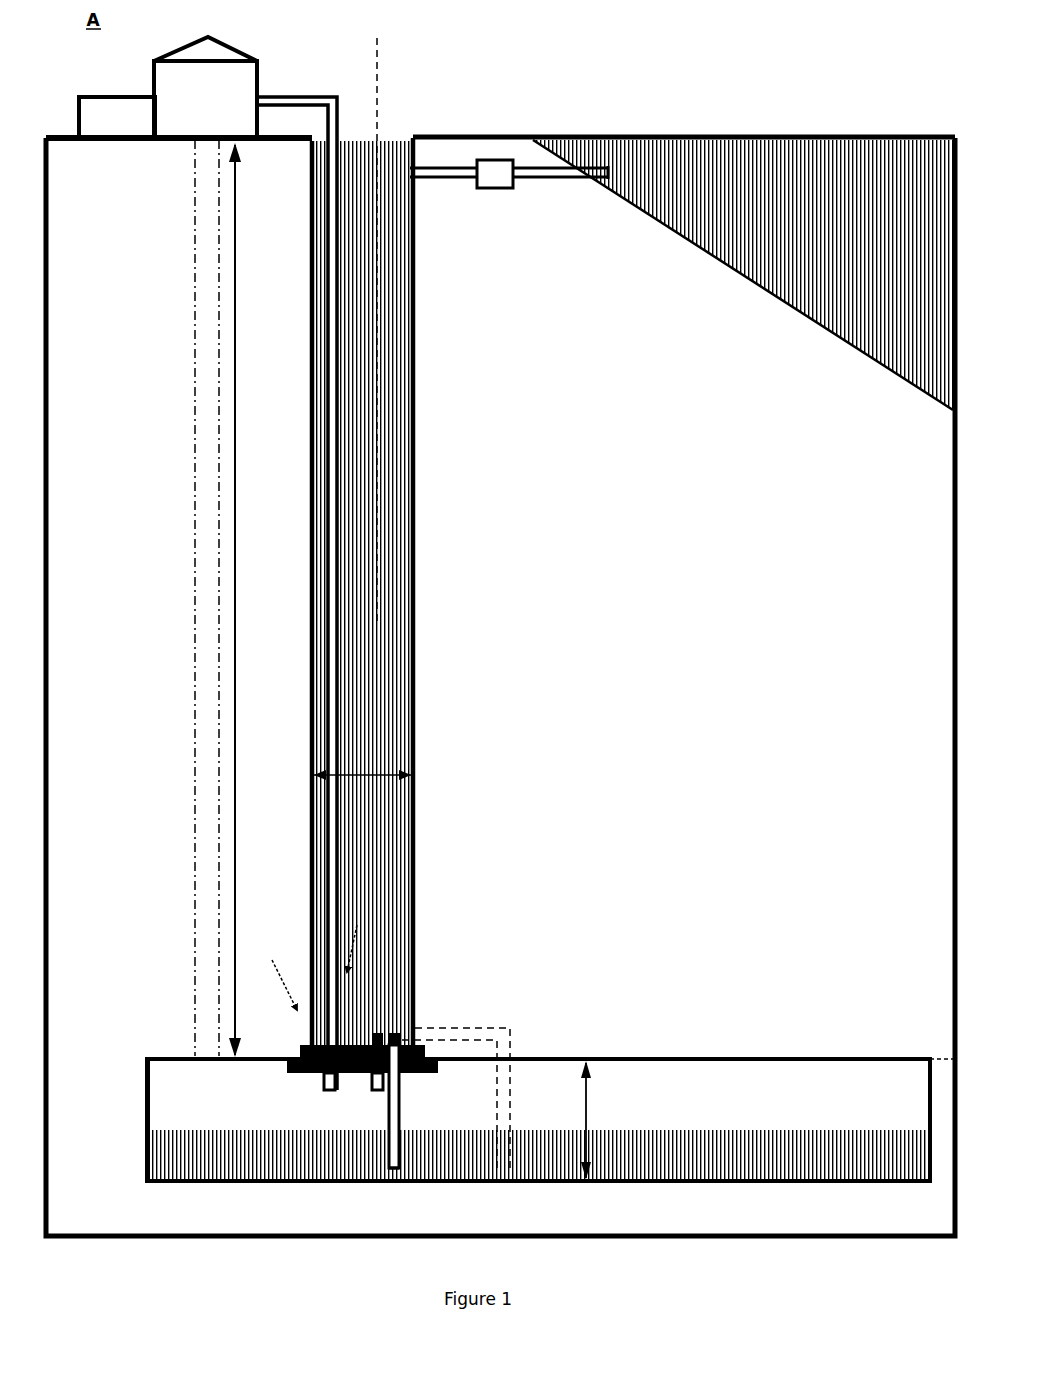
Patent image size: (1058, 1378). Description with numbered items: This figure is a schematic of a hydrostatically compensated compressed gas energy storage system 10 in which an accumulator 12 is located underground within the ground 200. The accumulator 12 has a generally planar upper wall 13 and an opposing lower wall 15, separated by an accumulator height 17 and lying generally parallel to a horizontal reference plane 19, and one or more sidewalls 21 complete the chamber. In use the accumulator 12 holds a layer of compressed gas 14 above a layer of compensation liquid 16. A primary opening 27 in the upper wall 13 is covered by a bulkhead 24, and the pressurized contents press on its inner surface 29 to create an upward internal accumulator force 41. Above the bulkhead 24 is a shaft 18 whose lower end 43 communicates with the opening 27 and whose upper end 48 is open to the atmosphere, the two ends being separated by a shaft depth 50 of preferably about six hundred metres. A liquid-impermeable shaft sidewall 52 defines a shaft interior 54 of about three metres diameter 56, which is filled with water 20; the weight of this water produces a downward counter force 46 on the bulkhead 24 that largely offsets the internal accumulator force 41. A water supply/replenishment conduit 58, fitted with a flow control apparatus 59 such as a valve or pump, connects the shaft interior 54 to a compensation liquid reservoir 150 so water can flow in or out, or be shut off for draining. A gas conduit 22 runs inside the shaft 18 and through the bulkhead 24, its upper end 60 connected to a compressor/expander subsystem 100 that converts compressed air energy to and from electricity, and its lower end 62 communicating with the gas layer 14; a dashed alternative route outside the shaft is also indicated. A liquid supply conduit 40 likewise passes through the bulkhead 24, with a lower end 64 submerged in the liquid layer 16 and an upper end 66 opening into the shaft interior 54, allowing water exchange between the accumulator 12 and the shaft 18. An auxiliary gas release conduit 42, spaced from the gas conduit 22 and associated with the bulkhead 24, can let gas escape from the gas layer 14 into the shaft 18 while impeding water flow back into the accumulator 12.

The hydrostatically compensated compressed gas energy storage system 10 is at (624, 78).
The compressor/expander subsystem 100 is at (268, 58).
The compensation liquid reservoir 150 is at (812, 187).
The ground 200 is at (676, 658).
The upper end of gas conduit 60 is at (283, 97).
The shaft 18 is at (310, 528).
The shaft sidewall 52 is at (415, 240).
The water 20 is at (320, 596).
The shaft interior 54 is at (400, 358).
The gas conduit 22 is at (326, 654).
The diameter 56 is at (363, 775).
The shaft depth 50 is at (238, 268).
The upper end of shaft 48 is at (297, 158).
The water supply/replenishment conduit 58 is at (538, 180).
The flow control apparatus 59 is at (495, 192).
The accumulator 12 is at (146, 1057).
The upper wall 13 is at (713, 1058).
The compressed gas layer 14 is at (153, 1108).
The lower wall 15 is at (712, 1183).
The compensation liquid layer 16 is at (157, 1160).
The accumulator height 17 is at (590, 1105).
The horizontal reference plane 19 is at (936, 1058).
The sidewall 21 is at (927, 1113).
The bulkhead 24 is at (300, 1045).
The inner surface 29 is at (303, 1077).
The primary opening 27 is at (283, 1072).
The counter force 46 is at (352, 1040).
The internal accumulator force 41 is at (350, 1078).
The auxiliary gas release conduit 42 is at (387, 1022).
The upper end of liquid supply conduit 66 is at (400, 1040).
The liquid supply conduit 40 is at (490, 1027).
The lower end of liquid supply conduit 64 is at (392, 1168).
The lower end of gas conduit 62 is at (360, 938).
The lower end of shaft 43 is at (277, 975).